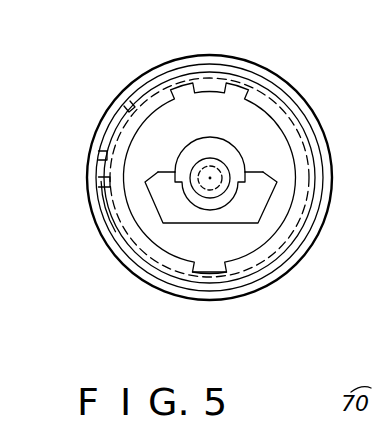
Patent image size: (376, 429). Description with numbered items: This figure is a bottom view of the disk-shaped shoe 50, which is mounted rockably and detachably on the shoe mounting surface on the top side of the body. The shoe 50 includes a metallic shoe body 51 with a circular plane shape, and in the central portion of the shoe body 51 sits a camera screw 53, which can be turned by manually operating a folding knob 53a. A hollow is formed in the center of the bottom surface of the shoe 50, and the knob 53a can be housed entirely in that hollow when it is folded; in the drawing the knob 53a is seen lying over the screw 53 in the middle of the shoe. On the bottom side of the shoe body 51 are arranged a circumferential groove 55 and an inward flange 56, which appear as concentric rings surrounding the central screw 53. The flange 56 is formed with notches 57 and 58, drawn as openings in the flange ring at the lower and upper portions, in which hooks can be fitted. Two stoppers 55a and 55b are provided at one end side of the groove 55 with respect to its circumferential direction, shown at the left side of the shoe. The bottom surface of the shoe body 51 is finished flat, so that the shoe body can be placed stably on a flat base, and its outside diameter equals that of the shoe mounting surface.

The shoe 50 is at (310, 76).
The shoe body 51 is at (312, 140).
The camera screw 53 is at (219, 168).
The folding knob 53a is at (262, 210).
The circumferential groove 55 is at (209, 63).
The stopper 55a is at (103, 152).
The stopper 55b is at (104, 184).
The inward flange 56 is at (140, 103).
The notch 57 is at (212, 272).
The notch 58 is at (177, 88).